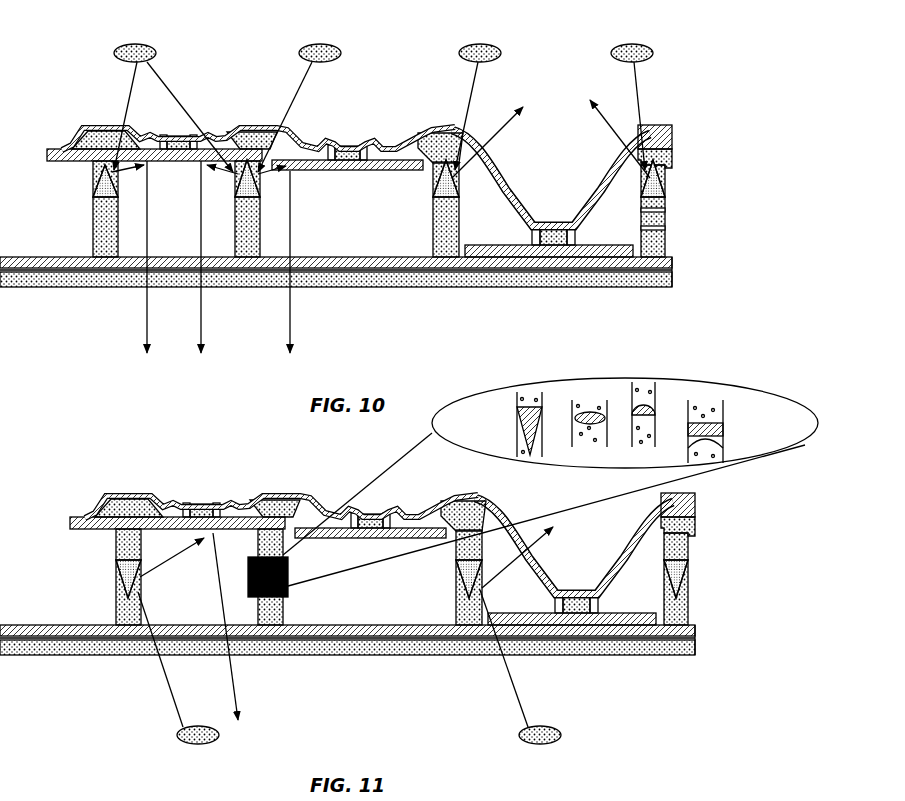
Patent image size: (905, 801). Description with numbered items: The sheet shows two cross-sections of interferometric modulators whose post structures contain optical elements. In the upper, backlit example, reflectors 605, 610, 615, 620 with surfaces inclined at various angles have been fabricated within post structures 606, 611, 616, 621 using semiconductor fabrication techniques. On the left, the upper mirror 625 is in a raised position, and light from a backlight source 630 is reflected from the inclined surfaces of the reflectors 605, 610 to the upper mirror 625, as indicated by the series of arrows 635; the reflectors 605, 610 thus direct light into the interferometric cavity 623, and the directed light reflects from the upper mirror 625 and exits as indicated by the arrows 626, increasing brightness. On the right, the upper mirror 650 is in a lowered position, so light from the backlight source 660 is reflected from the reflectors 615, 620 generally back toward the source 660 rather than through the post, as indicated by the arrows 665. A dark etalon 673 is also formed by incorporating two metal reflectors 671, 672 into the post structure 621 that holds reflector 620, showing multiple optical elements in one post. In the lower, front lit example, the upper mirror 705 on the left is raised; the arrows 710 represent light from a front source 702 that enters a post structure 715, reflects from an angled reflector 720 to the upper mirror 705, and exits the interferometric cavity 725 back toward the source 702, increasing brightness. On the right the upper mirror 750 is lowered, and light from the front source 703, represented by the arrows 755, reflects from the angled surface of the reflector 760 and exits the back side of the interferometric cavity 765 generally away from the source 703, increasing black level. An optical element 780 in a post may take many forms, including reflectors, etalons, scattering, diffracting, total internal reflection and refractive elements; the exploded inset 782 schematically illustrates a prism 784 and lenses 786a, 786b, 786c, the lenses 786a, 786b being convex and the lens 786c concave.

In FIG. 10, the reflector 605 is at (100, 175).
In FIG. 10, the post structure 606 is at (93, 247).
In FIG. 10, the reflector 610 is at (259, 186).
In FIG. 10, the post structure 611 is at (261, 248).
In FIG. 10, the reflector 615 is at (440, 175).
In FIG. 10, the post structure 616 is at (433, 247).
In FIG. 10, the reflector 620 is at (672, 165).
In FIG. 10, the post structure 621 is at (666, 252).
In FIG. 10, the interferometric cavity 623 is at (175, 237).
In FIG. 10, the upper mirror 625 is at (157, 163).
In FIG. 10, the arrows 626 is at (146, 328).
In FIG. 10, the backlight source 630 is at (130, 44).
In FIG. 10, the arrows 635 is at (129, 95).
In FIG. 10, the upper mirror 650 is at (527, 245).
In FIG. 10, the backlight source 660 is at (488, 44).
In FIG. 10, the arrows 665 is at (600, 118).
In FIG. 10, the metal reflector 671 is at (666, 211).
In FIG. 10, the metal reflector 672 is at (666, 229).
In FIG. 10, the dark etalon 673 is at (657, 224).
In FIG. 11, the front source 702 is at (179, 749).
In FIG. 11, the front source 703 is at (520, 749).
In FIG. 11, the upper mirror 705 is at (285, 500).
In FIG. 11, the arrows 710 is at (205, 630).
In FIG. 11, the post structure 715 is at (94, 577).
In FIG. 11, the angled reflector 720 is at (99, 579).
In FIG. 11, the interferometric cavity 725 is at (182, 597).
In FIG. 11, the upper mirror 750 is at (573, 607).
In FIG. 11, the arrows 755 is at (529, 627).
In FIG. 11, the reflector 760 is at (438, 579).
In FIG. 11, the interferometric cavity 765 is at (347, 656).
In FIG. 11, the optical element 780 is at (336, 591).
In FIG. 11, the exploded inset 782 is at (550, 482).
In FIG. 11, the prism 784 is at (519, 406).
In FIG. 11, the lens 786a is at (582, 388).
In FIG. 11, the lens 786b is at (635, 383).
In FIG. 11, the lens 786c is at (703, 396).